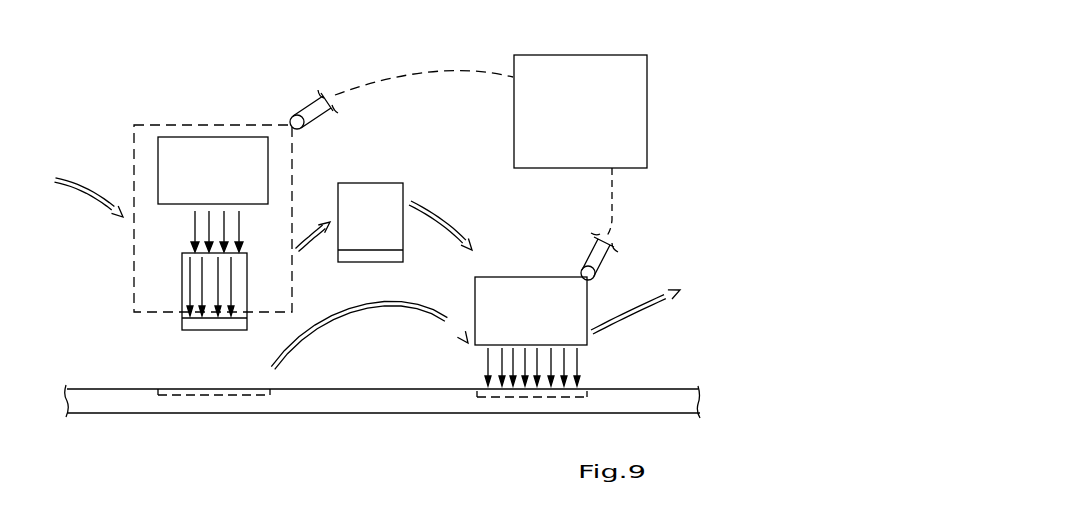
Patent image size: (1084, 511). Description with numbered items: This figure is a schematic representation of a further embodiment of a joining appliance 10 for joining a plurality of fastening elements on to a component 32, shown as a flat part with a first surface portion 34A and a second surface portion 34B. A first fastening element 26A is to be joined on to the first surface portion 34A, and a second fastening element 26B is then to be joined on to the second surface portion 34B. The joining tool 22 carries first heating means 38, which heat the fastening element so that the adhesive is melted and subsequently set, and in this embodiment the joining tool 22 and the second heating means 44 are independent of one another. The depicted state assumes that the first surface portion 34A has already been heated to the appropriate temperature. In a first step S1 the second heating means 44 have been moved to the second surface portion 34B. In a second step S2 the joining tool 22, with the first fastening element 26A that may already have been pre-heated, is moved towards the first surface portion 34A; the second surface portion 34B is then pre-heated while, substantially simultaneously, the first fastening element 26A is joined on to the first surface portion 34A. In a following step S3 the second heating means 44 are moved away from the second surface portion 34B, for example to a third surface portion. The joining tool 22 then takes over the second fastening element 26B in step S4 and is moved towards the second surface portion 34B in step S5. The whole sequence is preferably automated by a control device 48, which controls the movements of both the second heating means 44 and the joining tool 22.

The joining appliance 10 is at (552, 122).
The joining tool 22 is at (180, 186).
The first fastening element 26A is at (182, 282).
The second fastening element 26B is at (380, 183).
The component 32 is at (98, 400).
The first surface portion 34A is at (180, 397).
The second surface portion 34B is at (508, 397).
The first heating means 38 is at (170, 162).
The second heating means 44 is at (573, 305).
The control device 48 is at (637, 115).
The first step S1 is at (322, 323).
The second step S2 is at (78, 182).
The third step S3 is at (632, 308).
The step S4 is at (302, 237).
The step S5 is at (450, 223).